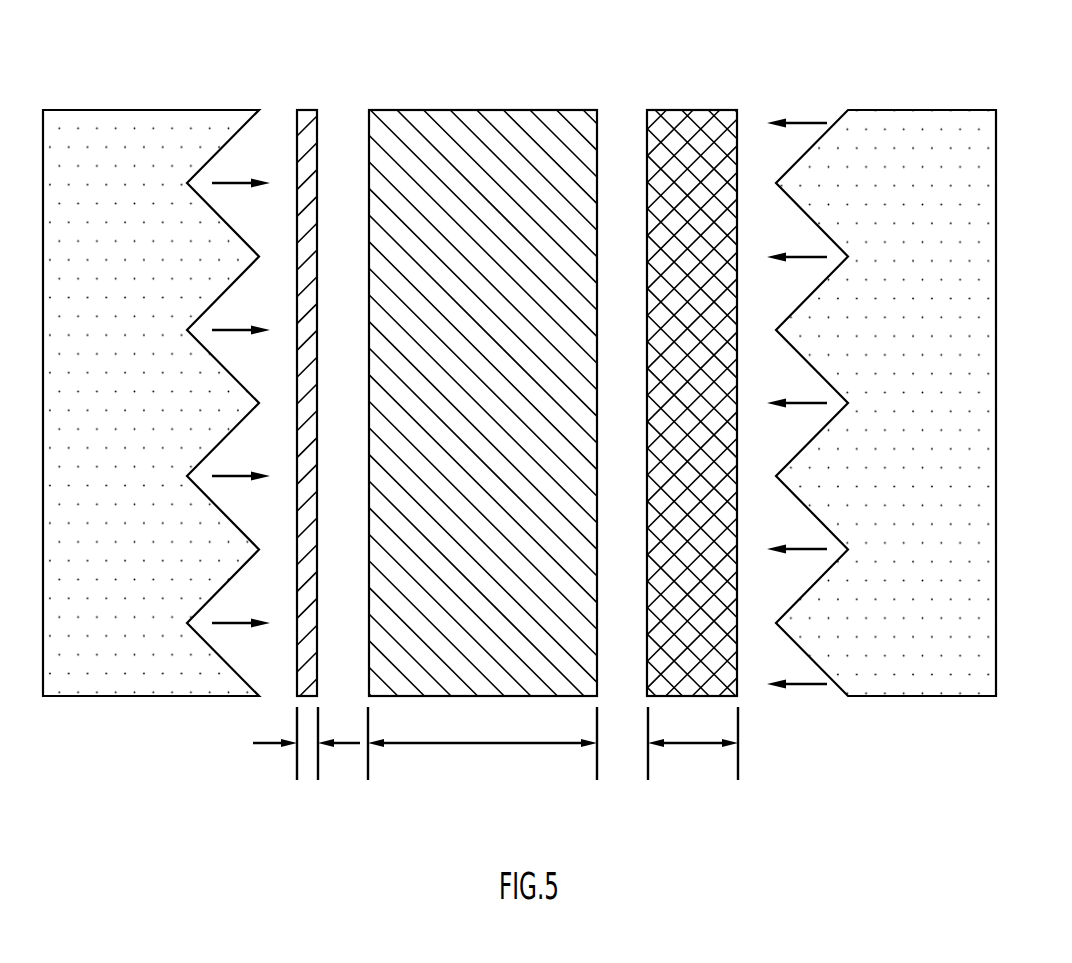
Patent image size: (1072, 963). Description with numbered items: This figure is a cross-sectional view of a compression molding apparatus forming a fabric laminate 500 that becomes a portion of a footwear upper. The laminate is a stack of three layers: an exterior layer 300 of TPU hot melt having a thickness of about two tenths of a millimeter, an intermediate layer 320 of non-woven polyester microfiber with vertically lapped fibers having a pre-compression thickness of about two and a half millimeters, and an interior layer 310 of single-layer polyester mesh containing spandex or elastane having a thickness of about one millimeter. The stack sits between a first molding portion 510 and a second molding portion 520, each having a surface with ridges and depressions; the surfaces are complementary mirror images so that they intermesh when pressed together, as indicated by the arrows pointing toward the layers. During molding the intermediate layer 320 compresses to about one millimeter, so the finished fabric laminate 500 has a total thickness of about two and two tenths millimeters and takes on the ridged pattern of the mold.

The fabric laminate 500 is at (1012, 84).
The first molding portion 510 is at (141, 697).
The second molding portion 520 is at (913, 697).
The exterior layer 300 is at (307, 110).
The intermediate layer 320 is at (448, 110).
The interior layer 310 is at (686, 110).